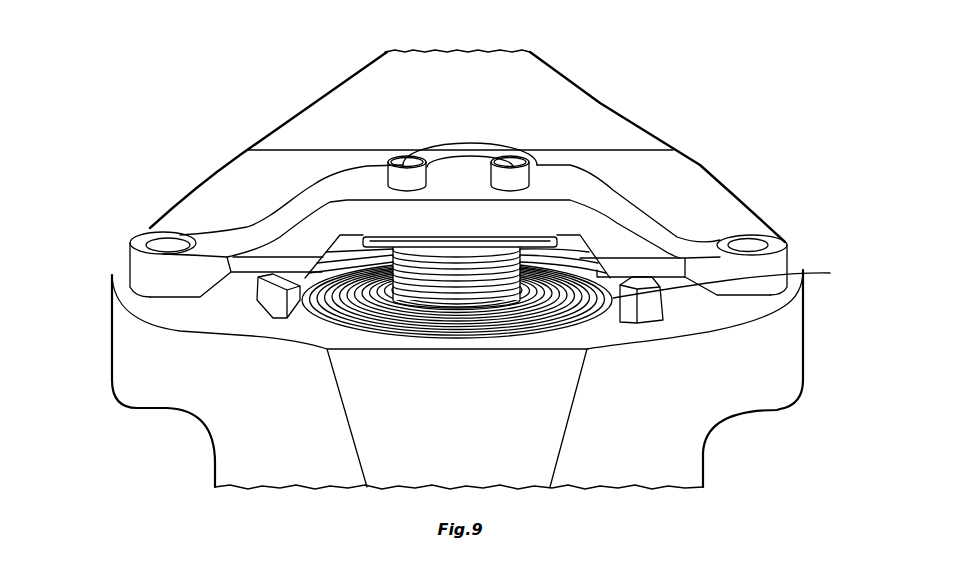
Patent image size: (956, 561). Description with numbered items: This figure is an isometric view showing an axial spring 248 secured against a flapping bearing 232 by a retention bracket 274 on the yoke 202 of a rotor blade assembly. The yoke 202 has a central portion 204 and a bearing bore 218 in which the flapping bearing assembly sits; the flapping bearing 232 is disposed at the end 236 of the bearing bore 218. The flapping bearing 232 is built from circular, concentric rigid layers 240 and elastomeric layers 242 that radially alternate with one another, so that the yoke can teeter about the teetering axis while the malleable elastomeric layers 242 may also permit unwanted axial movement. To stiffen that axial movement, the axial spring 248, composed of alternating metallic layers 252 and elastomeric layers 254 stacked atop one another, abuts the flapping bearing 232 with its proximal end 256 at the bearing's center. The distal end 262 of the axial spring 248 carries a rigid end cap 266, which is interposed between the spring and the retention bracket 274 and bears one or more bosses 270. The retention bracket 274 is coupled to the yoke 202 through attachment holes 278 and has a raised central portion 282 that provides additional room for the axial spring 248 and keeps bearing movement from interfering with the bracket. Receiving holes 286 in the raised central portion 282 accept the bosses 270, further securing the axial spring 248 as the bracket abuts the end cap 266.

The yoke 202 is at (690, 383).
The central portion 204 is at (653, 477).
The bearing bore 218 is at (327, 350).
The flapping bearing 232 is at (637, 325).
The end 236 is at (390, 287).
The rigid layers 240 is at (305, 290).
The elastomeric layers 242 is at (323, 283).
The axial spring 248 is at (785, 242).
The metallic layers 252 is at (487, 275).
The elastomeric layers 254 is at (438, 268).
The proximal end 256 is at (737, 293).
The distal end 262 is at (557, 240).
The end cap 266 is at (337, 235).
The bosses 270 is at (513, 157).
The retention bracket 274 is at (373, 168).
The attachment holes 278 is at (168, 246).
The raised central portion 282 is at (465, 173).
The receiving holes 286 is at (343, 190).